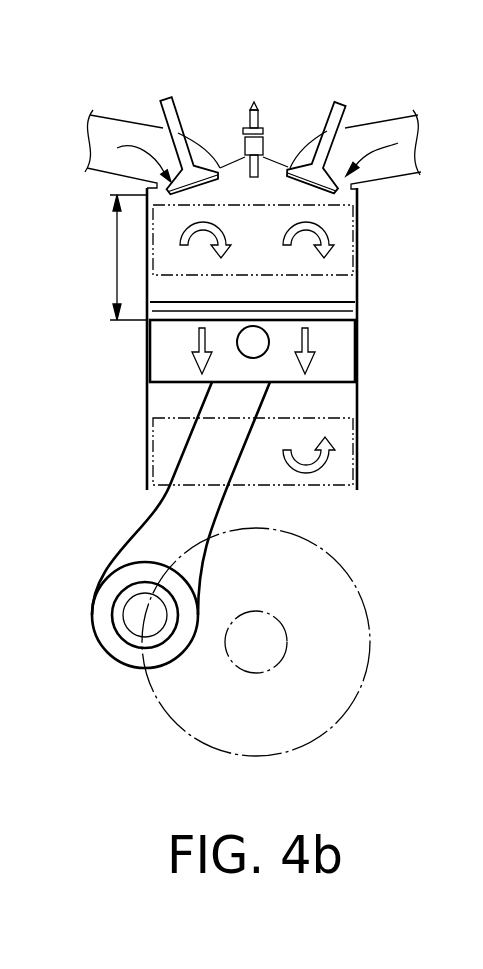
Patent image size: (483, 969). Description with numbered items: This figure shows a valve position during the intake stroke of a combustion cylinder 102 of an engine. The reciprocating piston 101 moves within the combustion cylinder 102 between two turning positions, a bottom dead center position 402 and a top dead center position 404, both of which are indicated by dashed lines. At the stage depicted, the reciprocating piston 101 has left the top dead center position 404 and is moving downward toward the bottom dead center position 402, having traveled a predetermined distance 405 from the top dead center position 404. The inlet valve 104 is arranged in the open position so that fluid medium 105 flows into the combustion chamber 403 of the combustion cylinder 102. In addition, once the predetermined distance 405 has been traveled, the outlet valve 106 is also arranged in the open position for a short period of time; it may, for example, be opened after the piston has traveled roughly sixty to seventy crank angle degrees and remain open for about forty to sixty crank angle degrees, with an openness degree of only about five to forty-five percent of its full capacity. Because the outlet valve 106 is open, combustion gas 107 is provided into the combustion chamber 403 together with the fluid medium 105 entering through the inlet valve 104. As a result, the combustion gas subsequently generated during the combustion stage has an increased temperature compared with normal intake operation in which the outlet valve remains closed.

The reciprocating piston 101 is at (357, 347).
The combustion cylinder 102 is at (147, 385).
The inlet valve 104 is at (124, 99).
The fluid medium 105 is at (117, 150).
The outlet valve 106 is at (381, 98).
The combustion gas 107 is at (398, 143).
The bottom dead center position 402 is at (357, 472).
The combustion chamber 403 is at (312, 289).
The top dead center position 404 is at (357, 222).
The predetermined distance 405 is at (107, 257).